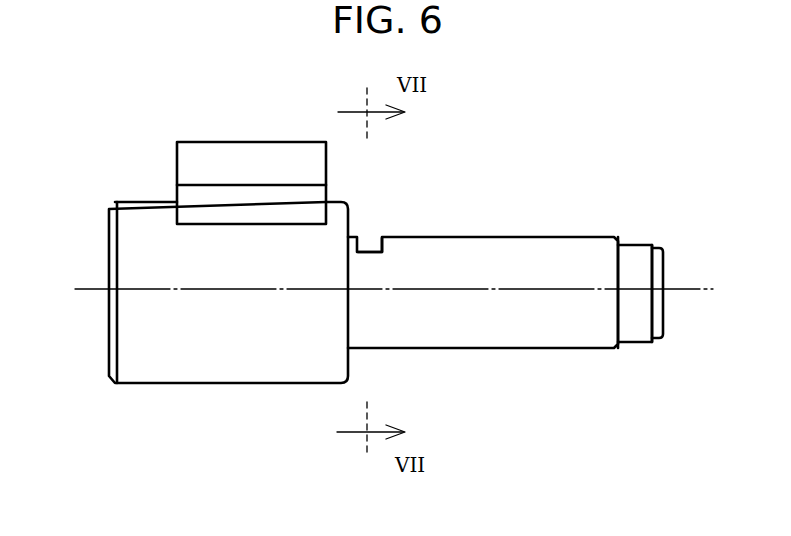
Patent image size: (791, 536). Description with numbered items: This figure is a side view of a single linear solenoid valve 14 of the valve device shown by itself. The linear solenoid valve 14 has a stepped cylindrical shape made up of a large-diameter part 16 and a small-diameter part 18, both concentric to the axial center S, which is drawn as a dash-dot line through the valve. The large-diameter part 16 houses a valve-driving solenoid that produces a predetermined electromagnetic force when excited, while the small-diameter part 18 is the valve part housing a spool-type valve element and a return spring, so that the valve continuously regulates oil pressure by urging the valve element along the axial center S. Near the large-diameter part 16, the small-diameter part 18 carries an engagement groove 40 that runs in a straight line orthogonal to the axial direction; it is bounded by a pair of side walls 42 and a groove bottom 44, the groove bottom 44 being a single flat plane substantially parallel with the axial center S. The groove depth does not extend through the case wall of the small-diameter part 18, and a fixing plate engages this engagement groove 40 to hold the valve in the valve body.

The linear solenoid valve 14 is at (386, 261).
The large-diameter part 16 is at (218, 353).
The small-diameter part 18 is at (496, 322).
The engagement groove 40 is at (388, 208).
The side walls 42 is at (377, 247).
The groove bottom 44 is at (363, 250).
The axial center S is at (383, 292).